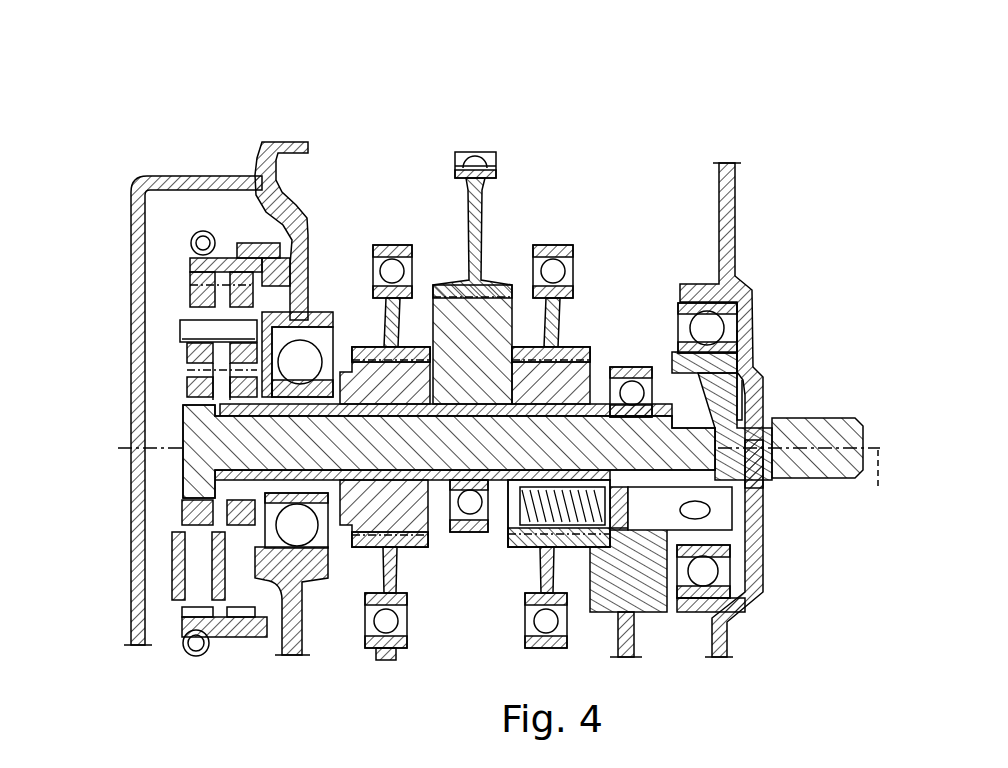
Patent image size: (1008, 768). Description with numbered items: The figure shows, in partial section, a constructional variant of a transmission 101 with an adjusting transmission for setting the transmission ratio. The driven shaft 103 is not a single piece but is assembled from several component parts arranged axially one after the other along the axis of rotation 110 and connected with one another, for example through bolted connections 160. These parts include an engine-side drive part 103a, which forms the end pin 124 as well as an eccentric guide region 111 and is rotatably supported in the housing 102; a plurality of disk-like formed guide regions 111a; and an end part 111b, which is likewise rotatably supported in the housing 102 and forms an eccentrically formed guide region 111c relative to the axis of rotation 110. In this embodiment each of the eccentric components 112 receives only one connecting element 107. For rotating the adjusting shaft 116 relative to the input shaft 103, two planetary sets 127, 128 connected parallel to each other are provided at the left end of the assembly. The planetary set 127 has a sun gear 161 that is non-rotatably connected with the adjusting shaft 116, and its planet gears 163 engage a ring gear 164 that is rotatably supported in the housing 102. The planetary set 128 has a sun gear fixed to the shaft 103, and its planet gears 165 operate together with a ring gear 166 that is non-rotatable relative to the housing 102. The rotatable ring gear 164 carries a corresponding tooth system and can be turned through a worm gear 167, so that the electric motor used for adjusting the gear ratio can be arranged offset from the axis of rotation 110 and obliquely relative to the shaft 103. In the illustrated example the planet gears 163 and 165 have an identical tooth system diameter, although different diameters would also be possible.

The transmission 101 is at (746, 120).
The housing 102 is at (253, 166).
The driven shaft 103 is at (745, 405).
The drive part 103a is at (758, 470).
The connecting element 107 is at (392, 650).
The axis of rotation 110 is at (880, 483).
The eccentric guide region 111 is at (640, 580).
The disk-like guide regions 111a is at (576, 350).
The end part 111b is at (356, 505).
The eccentrically formed guide region 111c is at (352, 350).
The eccentric components 112 is at (392, 572).
The adjusting shaft 116 is at (200, 430).
The end pin 124 is at (826, 436).
The planetary set 127 is at (178, 354).
The planetary set 128 is at (268, 292).
The bolted connections 160 is at (533, 538).
The sun gear 161 is at (200, 497).
The planet gears 163 is at (180, 295).
The ring gear 164 is at (190, 263).
The planet gears 165 is at (301, 226).
The ring gear 166 is at (246, 247).
The worm gear 167 is at (203, 230).